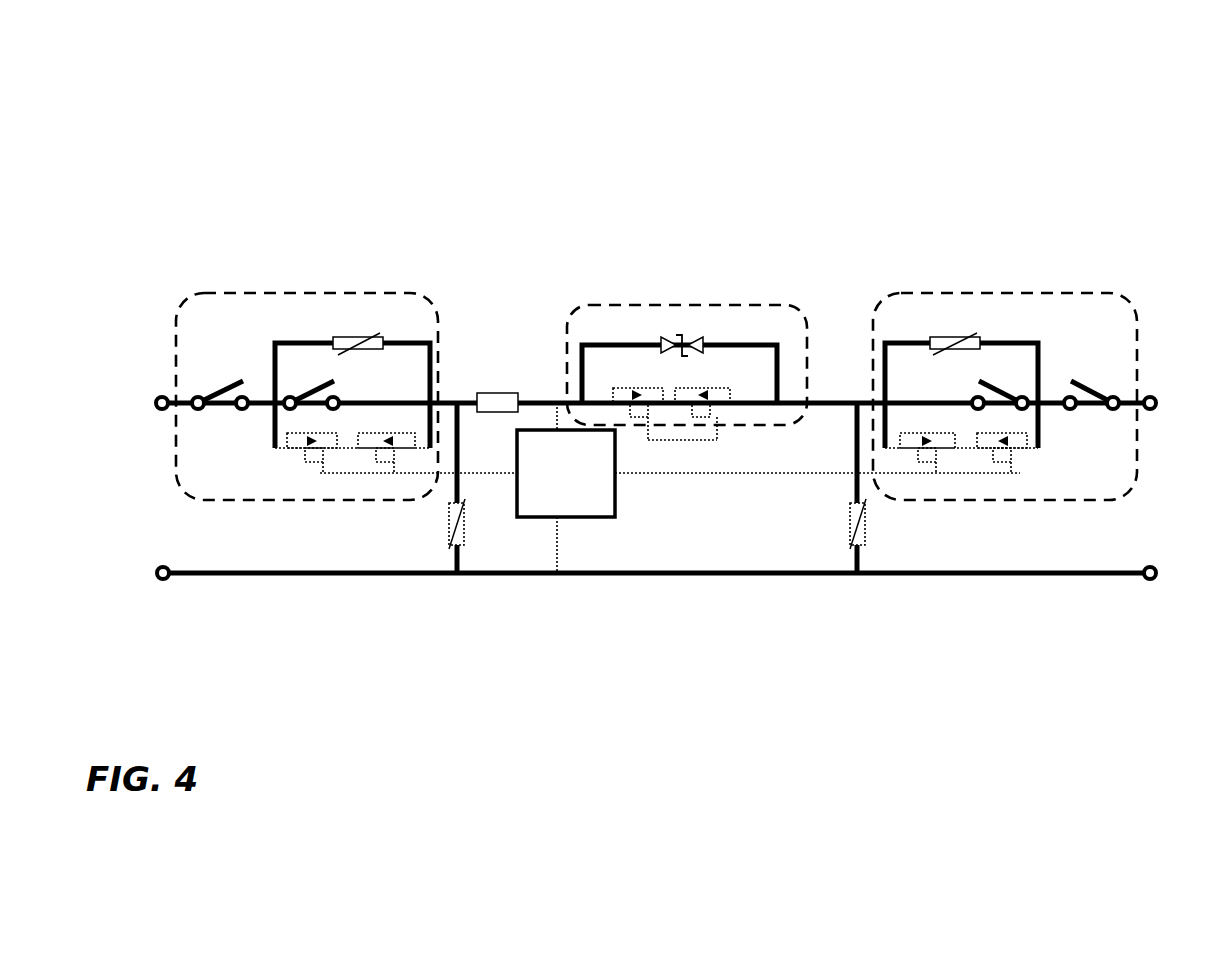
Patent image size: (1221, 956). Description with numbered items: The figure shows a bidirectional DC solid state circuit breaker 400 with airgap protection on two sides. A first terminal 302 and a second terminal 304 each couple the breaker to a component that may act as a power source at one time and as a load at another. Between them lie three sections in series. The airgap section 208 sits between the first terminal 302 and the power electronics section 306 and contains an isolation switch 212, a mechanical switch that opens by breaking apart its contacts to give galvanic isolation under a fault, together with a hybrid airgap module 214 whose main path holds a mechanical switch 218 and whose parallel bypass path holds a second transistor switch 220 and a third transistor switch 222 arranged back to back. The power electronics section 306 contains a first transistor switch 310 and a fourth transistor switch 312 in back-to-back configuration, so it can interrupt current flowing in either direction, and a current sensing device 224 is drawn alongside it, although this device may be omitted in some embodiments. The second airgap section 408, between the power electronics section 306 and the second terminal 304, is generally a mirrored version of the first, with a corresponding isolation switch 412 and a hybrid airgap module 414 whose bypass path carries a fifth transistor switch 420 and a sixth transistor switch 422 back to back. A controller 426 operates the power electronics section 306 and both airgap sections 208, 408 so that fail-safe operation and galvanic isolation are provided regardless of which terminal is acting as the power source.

The bidirectional DC solid state circuit breaker 400 is at (722, 119).
The airgap section 208 is at (209, 290).
The isolation switch SW1 212 is at (205, 411).
The hybrid airgap module 214 is at (292, 327).
The switch SW2 218 is at (297, 392).
The second transistor switch Q2 220 is at (330, 454).
The third transistor switch Q3 222 is at (397, 454).
The current sensing device 224 is at (489, 407).
The first terminal 302 is at (156, 394).
The second terminal 304 is at (1155, 397).
The power electronics section 306 is at (587, 303).
The first transistor switch Q1 310 is at (657, 408).
The fourth transistor switch Q4 312 is at (717, 405).
The second airgap section 408 is at (920, 290).
The switch SW3 412 is at (1027, 410).
The hybrid airgap module 414 is at (1004, 327).
The fifth transistor switch Q5 420 is at (940, 454).
The sixth transistor switch Q6 422 is at (1013, 454).
The controller 426 is at (566, 473).